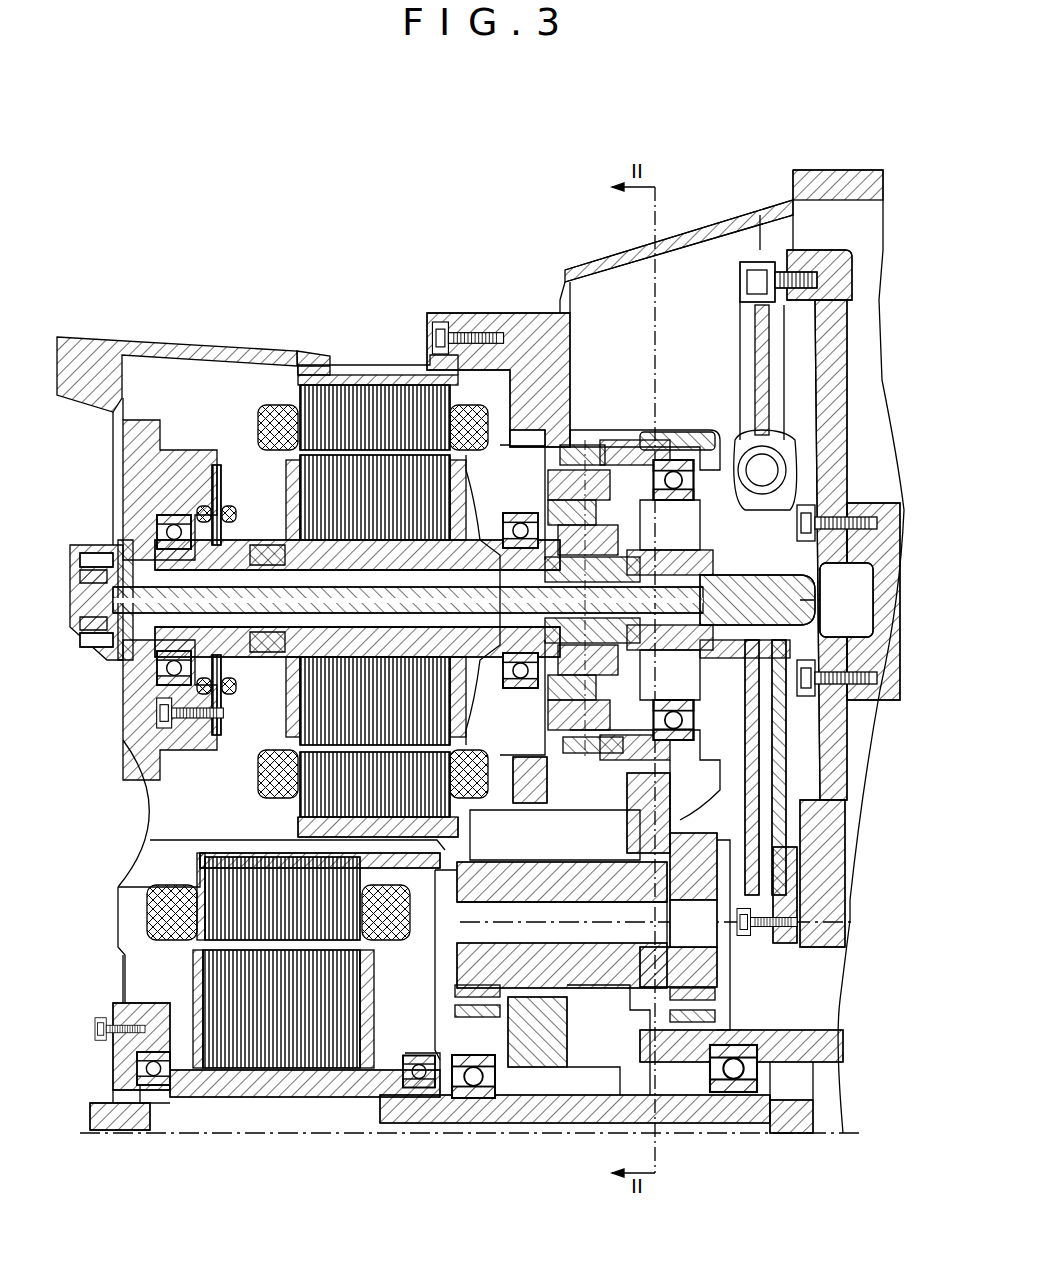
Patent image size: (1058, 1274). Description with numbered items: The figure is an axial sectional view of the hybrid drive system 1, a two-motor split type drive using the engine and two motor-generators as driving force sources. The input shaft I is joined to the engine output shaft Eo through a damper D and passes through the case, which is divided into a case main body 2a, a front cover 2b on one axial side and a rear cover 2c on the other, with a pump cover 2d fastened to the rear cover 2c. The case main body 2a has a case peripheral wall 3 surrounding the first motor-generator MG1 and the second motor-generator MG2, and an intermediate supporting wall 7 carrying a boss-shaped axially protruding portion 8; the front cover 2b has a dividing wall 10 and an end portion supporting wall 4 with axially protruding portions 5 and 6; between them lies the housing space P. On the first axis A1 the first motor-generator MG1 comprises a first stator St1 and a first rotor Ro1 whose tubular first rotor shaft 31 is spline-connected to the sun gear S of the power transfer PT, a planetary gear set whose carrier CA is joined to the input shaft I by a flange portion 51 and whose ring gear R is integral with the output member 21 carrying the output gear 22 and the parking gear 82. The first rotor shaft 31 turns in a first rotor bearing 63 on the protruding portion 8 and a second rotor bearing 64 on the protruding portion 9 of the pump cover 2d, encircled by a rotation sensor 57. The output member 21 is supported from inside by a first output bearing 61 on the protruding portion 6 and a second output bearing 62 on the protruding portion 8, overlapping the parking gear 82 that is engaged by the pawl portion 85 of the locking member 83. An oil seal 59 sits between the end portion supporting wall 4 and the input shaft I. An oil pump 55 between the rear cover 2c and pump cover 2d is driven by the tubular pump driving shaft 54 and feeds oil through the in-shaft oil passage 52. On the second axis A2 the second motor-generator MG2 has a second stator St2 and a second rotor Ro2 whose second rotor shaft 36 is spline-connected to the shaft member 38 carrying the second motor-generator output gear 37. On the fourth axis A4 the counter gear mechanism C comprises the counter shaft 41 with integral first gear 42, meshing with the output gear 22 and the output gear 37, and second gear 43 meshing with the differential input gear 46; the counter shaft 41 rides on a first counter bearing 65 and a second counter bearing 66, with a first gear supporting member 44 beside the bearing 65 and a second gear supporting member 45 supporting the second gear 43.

The hybrid drive system 1 is at (205, 155).
The case main body 2a is at (245, 352).
The front cover 2b is at (680, 238).
The rear cover 2c is at (95, 335).
The pump cover 2d is at (162, 748).
The case peripheral wall 3 is at (368, 372).
The end portion supporting wall 4 is at (722, 470).
The axially protruding portion 5 is at (690, 558).
The axially protruding portion 6 is at (654, 470).
The intermediate supporting wall 7 is at (483, 600).
The axially protruding portion 8 is at (520, 500).
The axially protruding portion 9 is at (150, 468).
The dividing wall 10 is at (655, 445).
The output member 21 is at (608, 445).
The output gear 22 is at (688, 432).
The first rotor shaft 31 is at (258, 660).
The second rotor shaft 36 is at (300, 1097).
The second motor-generator output gear 37 is at (684, 1095).
The shaft member 38 is at (476, 1105).
The counter shaft 41 is at (720, 950).
The first gear 42 is at (720, 740).
The second gear 43 is at (650, 790).
The first gear supporting member 44 is at (720, 780).
The second gear supporting member 45 is at (537, 865).
The differential input gear 46 is at (540, 1068).
The flange portion 51 is at (622, 648).
The in-shaft oil passage 52 is at (413, 601).
The pump driving shaft 54 is at (260, 582).
The oil pump 55 is at (112, 622).
The rotation sensor 57 is at (205, 500).
The oil seal 59 is at (757, 600).
The first output bearing 61 is at (766, 440).
The second output bearing 62 is at (512, 668).
The first rotor bearing 63 is at (510, 530).
The second rotor bearing 64 is at (158, 528).
The first counter bearing 65 is at (710, 1000).
The second counter bearing 66 is at (458, 1000).
The parking gear 82 is at (528, 430).
The locking member 83 is at (532, 802).
The pawl portion 85 is at (545, 762).
The first motor-generator MG1 is at (335, 378).
The second motor-generator MG2 is at (158, 868).
The first stator St1 is at (256, 420).
The second stator St2 is at (145, 903).
The first rotor Ro1 is at (283, 470).
The second rotor Ro2 is at (190, 985).
The power transfer PT is at (582, 440).
The ring gear R is at (614, 495).
The sun gear S is at (556, 645).
The carrier CA is at (620, 745).
The damper D is at (740, 345).
The engine output shaft Eo is at (878, 505).
The input shaft I is at (818, 587).
The housing space P is at (616, 1042).
The counter gear mechanism C is at (585, 997).
The first axis A1 is at (844, 603).
The second axis A2 is at (486, 1134).
The fourth axis A4 is at (672, 921).